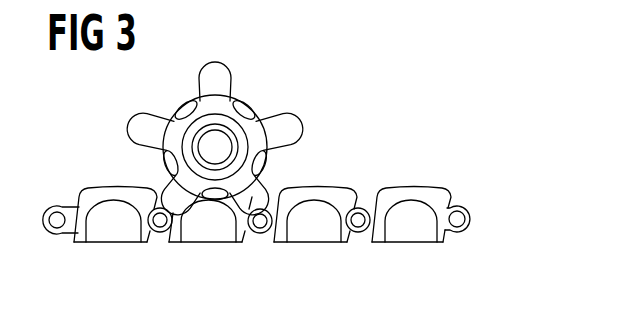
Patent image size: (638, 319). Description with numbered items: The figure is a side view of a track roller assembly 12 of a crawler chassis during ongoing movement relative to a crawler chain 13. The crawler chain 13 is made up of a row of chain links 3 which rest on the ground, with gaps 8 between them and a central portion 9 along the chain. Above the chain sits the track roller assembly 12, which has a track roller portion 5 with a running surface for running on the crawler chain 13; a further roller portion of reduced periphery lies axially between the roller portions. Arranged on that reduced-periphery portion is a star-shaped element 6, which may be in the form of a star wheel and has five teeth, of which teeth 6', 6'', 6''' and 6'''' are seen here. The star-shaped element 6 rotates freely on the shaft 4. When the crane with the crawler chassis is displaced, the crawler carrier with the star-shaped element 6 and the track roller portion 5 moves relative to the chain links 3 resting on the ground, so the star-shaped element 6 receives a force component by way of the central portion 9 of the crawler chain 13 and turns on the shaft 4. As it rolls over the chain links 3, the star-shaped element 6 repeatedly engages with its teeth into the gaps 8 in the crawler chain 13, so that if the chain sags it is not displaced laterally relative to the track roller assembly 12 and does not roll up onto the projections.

The chain links 3 is at (443, 192).
The shaft 4 is at (218, 142).
The track roller portion 5 is at (246, 98).
The star-shaped element 6 is at (194, 81).
The tooth 6' is at (285, 109).
The tooth 6'' is at (271, 182).
The tooth 6''' is at (160, 189).
The tooth 6'''' is at (128, 129).
The gaps 8 is at (259, 236).
The central portion 9 is at (308, 214).
The track roller assembly 12 is at (235, 138).
The crawler chain 13 is at (297, 215).